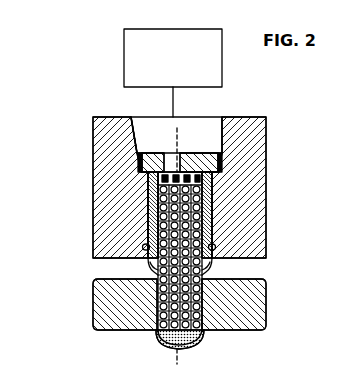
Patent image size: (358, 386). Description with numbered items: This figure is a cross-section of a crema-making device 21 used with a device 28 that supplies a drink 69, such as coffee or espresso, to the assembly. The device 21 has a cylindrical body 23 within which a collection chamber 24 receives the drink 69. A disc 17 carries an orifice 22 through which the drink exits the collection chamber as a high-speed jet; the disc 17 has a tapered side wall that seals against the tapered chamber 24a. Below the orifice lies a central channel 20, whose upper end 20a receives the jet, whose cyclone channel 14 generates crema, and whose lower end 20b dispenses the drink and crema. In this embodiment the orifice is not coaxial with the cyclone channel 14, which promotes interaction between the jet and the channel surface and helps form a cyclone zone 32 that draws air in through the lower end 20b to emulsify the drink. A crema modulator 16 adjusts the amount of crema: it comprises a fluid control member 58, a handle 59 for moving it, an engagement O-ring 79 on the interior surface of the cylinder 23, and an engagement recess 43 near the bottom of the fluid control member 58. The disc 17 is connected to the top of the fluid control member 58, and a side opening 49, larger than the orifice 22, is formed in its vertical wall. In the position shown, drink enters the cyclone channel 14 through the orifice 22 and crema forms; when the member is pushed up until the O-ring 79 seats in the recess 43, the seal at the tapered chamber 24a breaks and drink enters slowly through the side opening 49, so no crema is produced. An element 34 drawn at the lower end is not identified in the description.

The drink supply device 28 is at (184, 67).
The device 21 is at (284, 109).
The cylindrical body 23 is at (93, 133).
The drink 69 is at (187, 128).
The collection chamber 24 is at (137, 137).
The disc 17 is at (221, 155).
The orifice 22 is at (214, 165).
The tapered chamber 24a is at (142, 172).
The upper end of central channel 20a is at (209, 182).
The cyclone channel 14 is at (148, 216).
The side opening 49 is at (150, 192).
The central channel 20 is at (207, 209).
The engagement O-ring 79 is at (141, 248).
The cyclone zone 32 is at (214, 244).
The engagement recess 43 is at (150, 265).
The fluid control member 58 is at (209, 261).
The crema modulator 16 is at (86, 313).
The handle 59 is at (257, 299).
The bottom end 34 is at (162, 342).
The lower end of central channel 20b is at (200, 338).